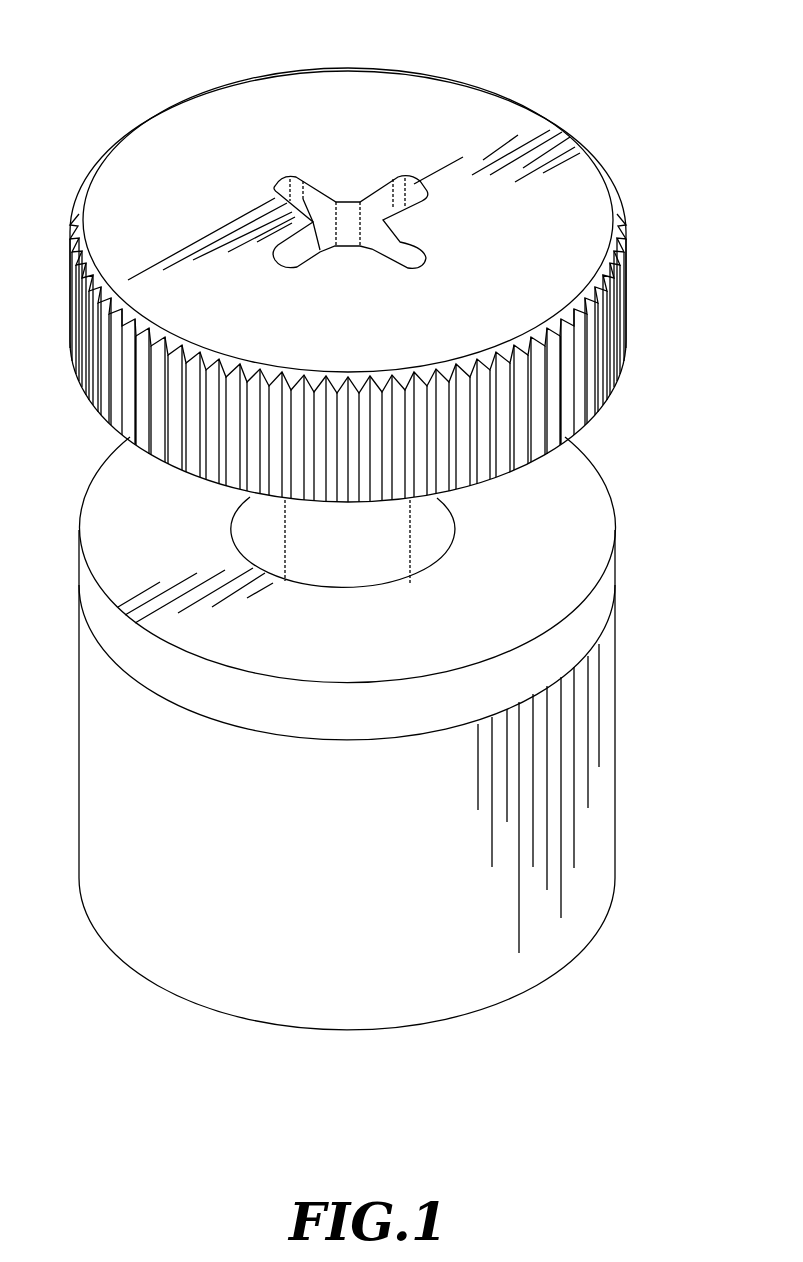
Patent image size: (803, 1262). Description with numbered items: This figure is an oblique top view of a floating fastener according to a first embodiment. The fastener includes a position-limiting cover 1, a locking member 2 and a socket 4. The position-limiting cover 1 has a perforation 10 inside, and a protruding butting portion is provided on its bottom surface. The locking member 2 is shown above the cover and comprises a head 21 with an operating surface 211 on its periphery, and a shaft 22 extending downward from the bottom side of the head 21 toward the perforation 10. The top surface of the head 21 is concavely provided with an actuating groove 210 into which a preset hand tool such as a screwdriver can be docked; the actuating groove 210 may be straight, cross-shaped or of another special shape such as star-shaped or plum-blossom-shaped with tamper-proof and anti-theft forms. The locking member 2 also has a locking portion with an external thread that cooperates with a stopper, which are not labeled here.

The position-limiting cover 1 is at (640, 575).
The locking member 2 is at (648, 244).
The socket 4 is at (660, 777).
The perforation 10 is at (262, 548).
The head 21 is at (115, 205).
The shaft 22 is at (378, 535).
The actuating groove 210 is at (376, 210).
The operating surface 211 is at (582, 364).